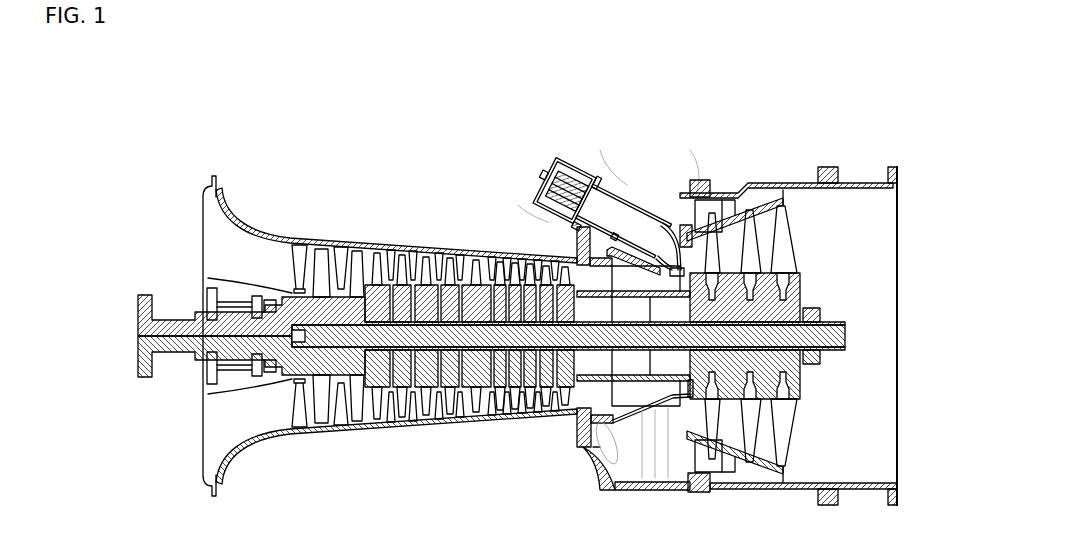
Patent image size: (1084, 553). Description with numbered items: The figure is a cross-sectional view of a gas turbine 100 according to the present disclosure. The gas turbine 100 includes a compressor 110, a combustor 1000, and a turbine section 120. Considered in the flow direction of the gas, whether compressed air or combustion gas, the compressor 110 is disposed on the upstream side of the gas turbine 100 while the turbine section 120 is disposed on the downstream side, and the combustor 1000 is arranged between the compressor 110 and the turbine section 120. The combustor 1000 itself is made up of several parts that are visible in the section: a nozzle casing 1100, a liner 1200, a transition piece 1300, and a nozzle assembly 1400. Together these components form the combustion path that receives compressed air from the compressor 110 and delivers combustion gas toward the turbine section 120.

The gas turbine 100 is at (296, 108).
The compressor 110 is at (360, 229).
The turbine section 120 is at (818, 275).
The combustor 1000 is at (548, 147).
The nozzle casing 1100 is at (550, 218).
The liner 1200 is at (604, 177).
The transition piece 1300 is at (650, 194).
The nozzle assembly 1400 is at (565, 160).